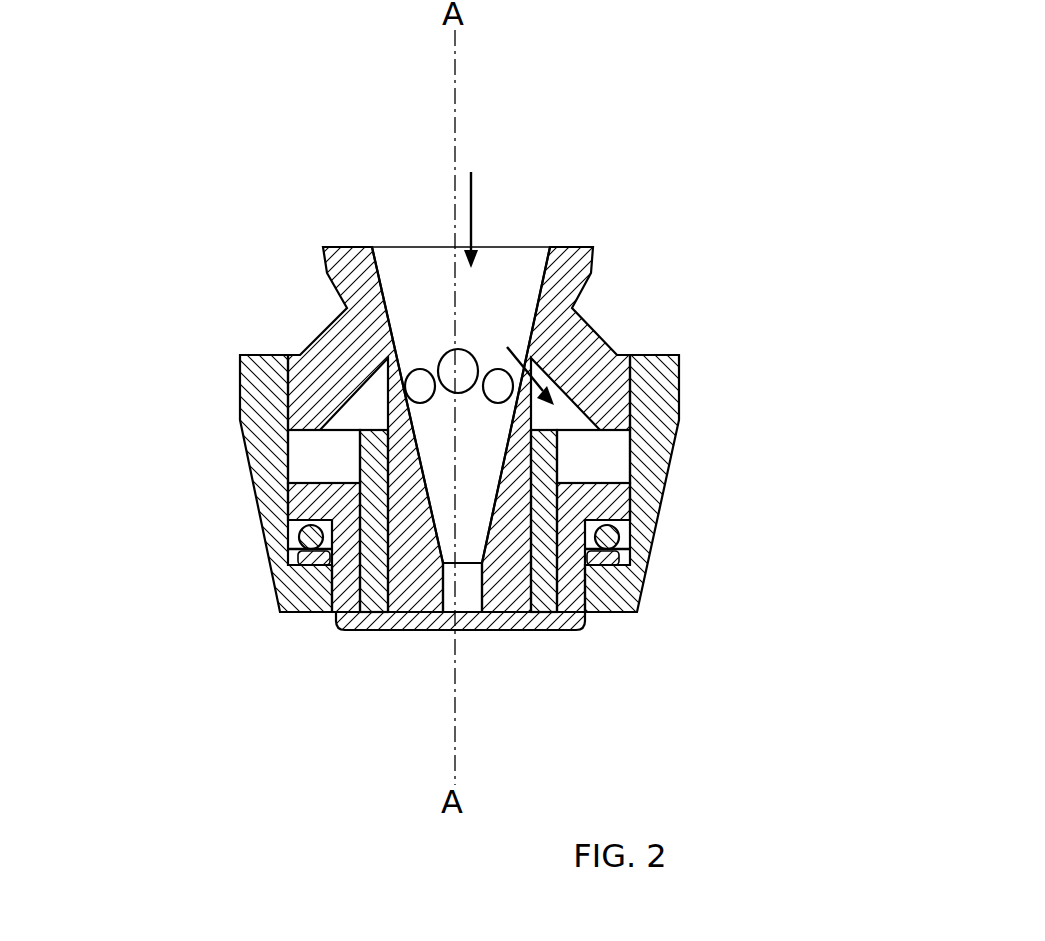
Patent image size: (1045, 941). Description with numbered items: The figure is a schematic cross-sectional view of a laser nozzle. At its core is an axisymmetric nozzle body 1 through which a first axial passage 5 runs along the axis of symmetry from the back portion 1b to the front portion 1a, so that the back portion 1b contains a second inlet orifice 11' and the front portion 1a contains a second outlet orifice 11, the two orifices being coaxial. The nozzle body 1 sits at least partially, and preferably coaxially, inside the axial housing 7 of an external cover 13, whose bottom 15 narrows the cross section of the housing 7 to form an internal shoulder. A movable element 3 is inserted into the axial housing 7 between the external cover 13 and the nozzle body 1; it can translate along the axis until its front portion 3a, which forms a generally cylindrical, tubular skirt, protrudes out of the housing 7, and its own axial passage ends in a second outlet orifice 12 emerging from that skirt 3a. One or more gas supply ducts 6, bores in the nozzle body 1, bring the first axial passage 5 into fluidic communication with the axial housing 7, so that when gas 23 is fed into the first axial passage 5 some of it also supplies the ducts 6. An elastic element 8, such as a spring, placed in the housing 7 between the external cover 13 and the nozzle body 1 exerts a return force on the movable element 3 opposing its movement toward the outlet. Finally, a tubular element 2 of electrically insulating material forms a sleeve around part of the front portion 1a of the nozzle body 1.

The nozzle body 1 is at (558, 308).
The front portion of the nozzle body 1a is at (490, 583).
The back portion of the nozzle body 1b is at (560, 267).
The tubular element 2 is at (370, 597).
The movable element 3 is at (613, 510).
The front portion forming a skirt 3a is at (567, 610).
The first axial passage 5 is at (465, 301).
The gas supply duct 6 is at (457, 377).
The axial housing 7 is at (316, 468).
The elastic element 8 is at (308, 545).
The second outlet orifice 11 is at (431, 646).
The second inlet orifice 11' is at (454, 167).
The second outlet orifice of the movable element 12 is at (383, 627).
The external cover 13 is at (643, 413).
The bottom of the external cover 15 is at (610, 580).
The gas 23 is at (708, 300).